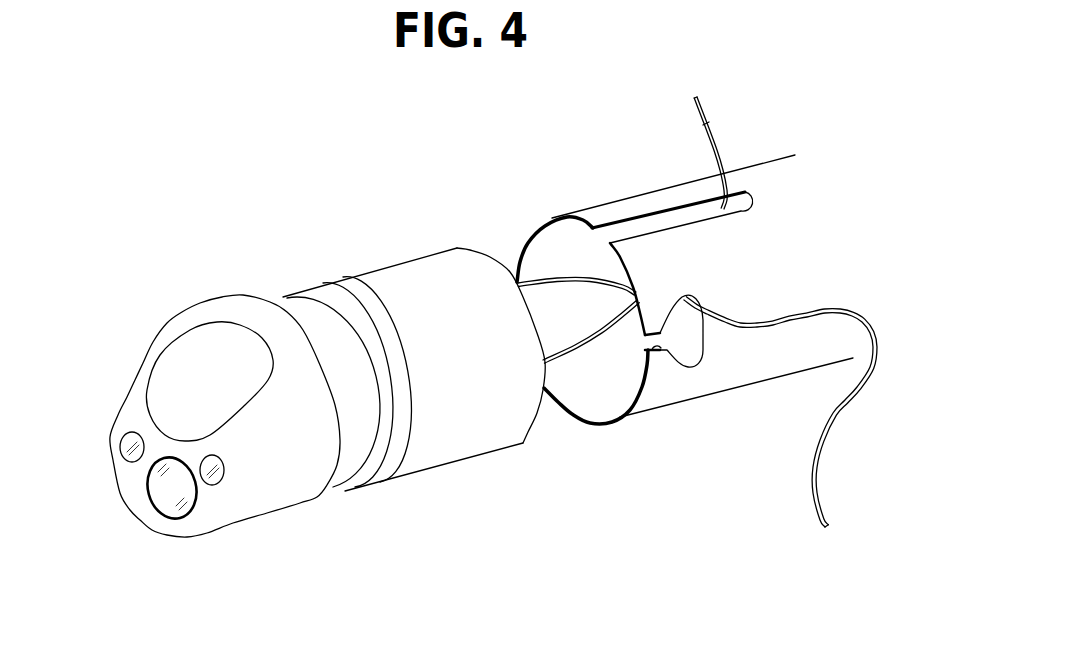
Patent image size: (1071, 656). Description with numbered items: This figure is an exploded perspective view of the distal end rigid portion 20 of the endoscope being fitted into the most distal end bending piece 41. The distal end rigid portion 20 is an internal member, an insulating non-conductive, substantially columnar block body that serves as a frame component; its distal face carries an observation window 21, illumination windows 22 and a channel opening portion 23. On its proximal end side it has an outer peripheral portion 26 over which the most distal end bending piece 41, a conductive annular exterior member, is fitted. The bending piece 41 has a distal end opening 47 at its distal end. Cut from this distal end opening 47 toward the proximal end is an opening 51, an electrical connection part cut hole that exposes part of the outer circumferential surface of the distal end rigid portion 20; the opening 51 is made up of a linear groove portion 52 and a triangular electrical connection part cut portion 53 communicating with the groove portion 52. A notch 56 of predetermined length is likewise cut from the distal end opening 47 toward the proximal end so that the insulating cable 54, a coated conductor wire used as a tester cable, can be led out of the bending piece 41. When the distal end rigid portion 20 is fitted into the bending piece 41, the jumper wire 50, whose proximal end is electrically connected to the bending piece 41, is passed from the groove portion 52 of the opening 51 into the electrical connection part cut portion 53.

The distal end rigid portion 20 is at (299, 382).
The observation window 21 is at (160, 508).
The illumination windows 22 is at (120, 447).
The channel opening portion 23 is at (178, 350).
The outer peripheral portion 26 is at (453, 440).
The most distal end bending piece 41 is at (678, 186).
The distal end opening 47 is at (549, 237).
The jumper wire 50 is at (753, 322).
The opening 51 is at (695, 409).
The groove portion 52 is at (665, 353).
The electrical connection part cut portion 53 is at (700, 364).
The insulating cable 54 is at (727, 150).
The notch 56 is at (643, 218).